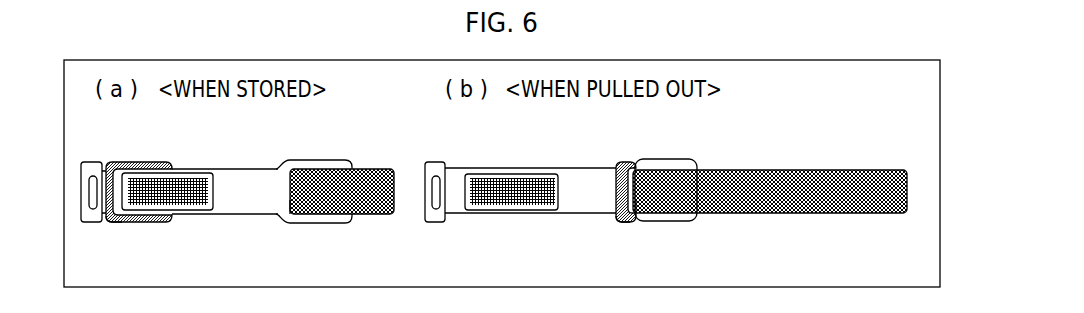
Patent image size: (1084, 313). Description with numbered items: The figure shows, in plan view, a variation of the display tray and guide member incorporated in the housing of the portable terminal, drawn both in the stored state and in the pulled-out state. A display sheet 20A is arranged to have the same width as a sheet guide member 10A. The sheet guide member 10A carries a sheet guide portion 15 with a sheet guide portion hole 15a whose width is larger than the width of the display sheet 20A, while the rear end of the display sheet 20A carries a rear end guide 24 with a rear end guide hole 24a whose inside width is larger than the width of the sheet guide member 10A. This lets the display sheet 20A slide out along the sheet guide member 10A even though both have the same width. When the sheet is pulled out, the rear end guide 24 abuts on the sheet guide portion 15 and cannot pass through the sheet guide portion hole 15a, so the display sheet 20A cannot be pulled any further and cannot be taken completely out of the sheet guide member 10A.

The sheet guide member 10A is at (370, 169).
The display sheet 20A is at (242, 178).
The sheet guide portion 15 is at (142, 163).
The sheet guide portion hole 15a is at (122, 208).
The rear end guide 24 is at (342, 225).
The rear end guide hole 24a is at (300, 200).